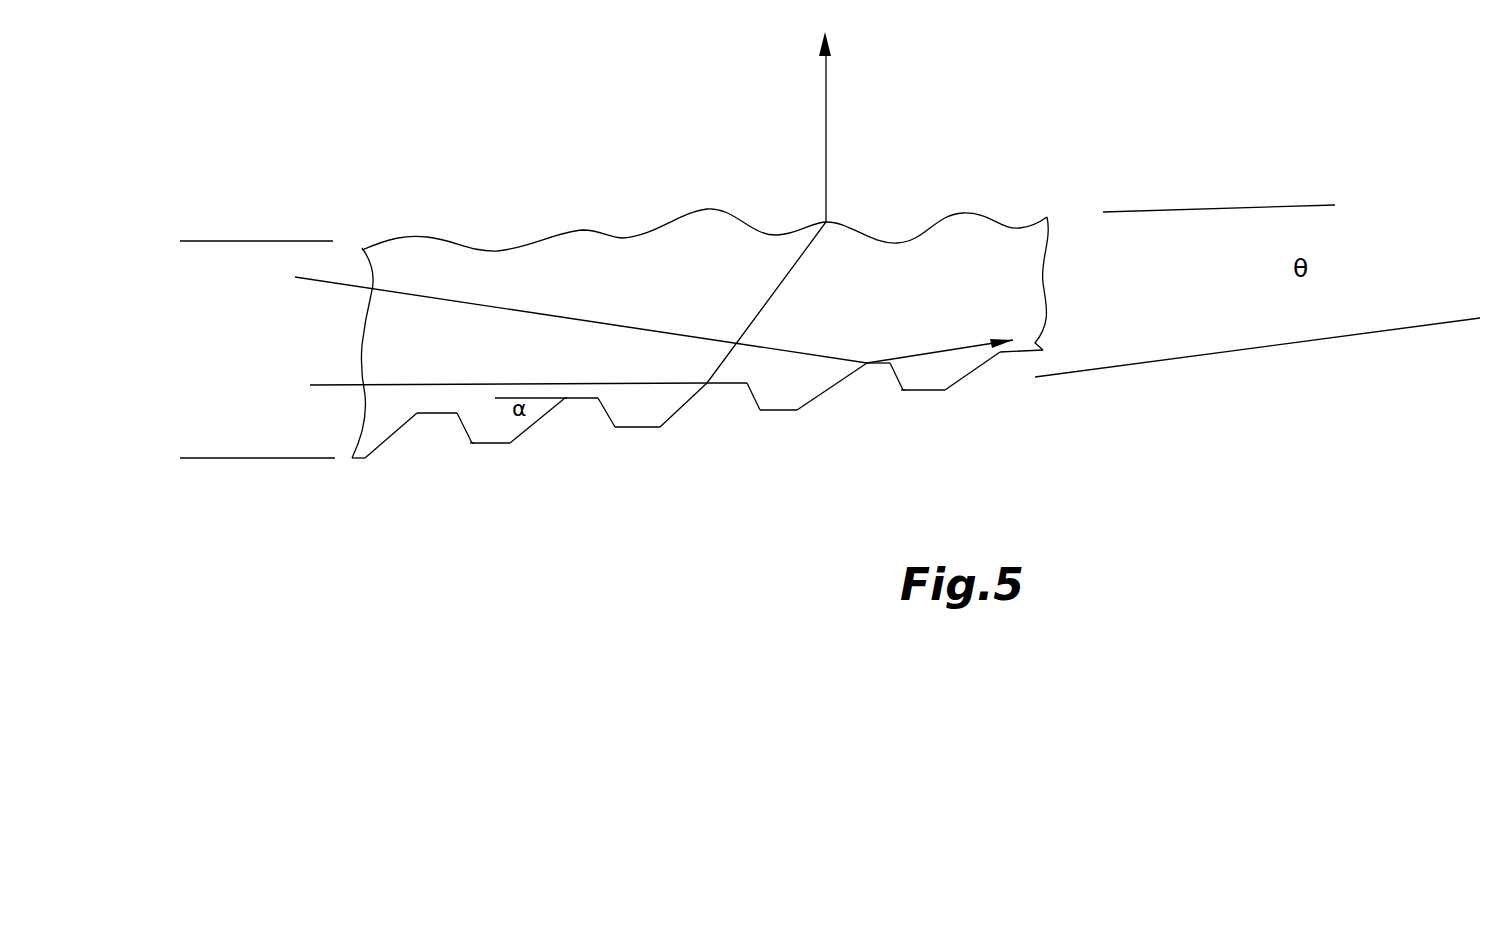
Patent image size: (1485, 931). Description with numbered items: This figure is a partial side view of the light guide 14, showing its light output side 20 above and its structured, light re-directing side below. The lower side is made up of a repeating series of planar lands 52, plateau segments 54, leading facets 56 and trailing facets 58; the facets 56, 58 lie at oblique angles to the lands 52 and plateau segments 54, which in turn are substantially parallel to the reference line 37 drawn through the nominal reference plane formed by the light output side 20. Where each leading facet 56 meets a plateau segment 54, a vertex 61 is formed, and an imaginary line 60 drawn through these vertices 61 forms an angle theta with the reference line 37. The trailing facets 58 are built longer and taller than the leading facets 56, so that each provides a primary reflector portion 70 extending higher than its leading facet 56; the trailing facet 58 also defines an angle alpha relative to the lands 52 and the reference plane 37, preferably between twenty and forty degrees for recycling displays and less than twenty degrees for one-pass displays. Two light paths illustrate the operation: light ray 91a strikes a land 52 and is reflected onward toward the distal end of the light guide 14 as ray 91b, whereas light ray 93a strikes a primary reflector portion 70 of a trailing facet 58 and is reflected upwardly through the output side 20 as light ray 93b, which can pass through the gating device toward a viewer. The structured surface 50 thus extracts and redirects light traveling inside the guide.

The light guide 14 is at (358, 238).
The light output side 20 is at (738, 222).
The line through the nominal reference plane 37 is at (1178, 210).
The structured surface 50 is at (504, 455).
The land 52 is at (583, 400).
The plateau segment 54 is at (490, 443).
The leading facet 56 is at (457, 428).
The trailing facet 58 is at (533, 420).
The imaginary line 60 is at (1112, 368).
The vertex 61 is at (472, 443).
The primary reflector portion 70 is at (568, 398).
The light ray 91a is at (435, 300).
The reflected light ray 91b is at (937, 343).
The light ray 93a is at (487, 385).
The reflected light ray 93b is at (825, 115).